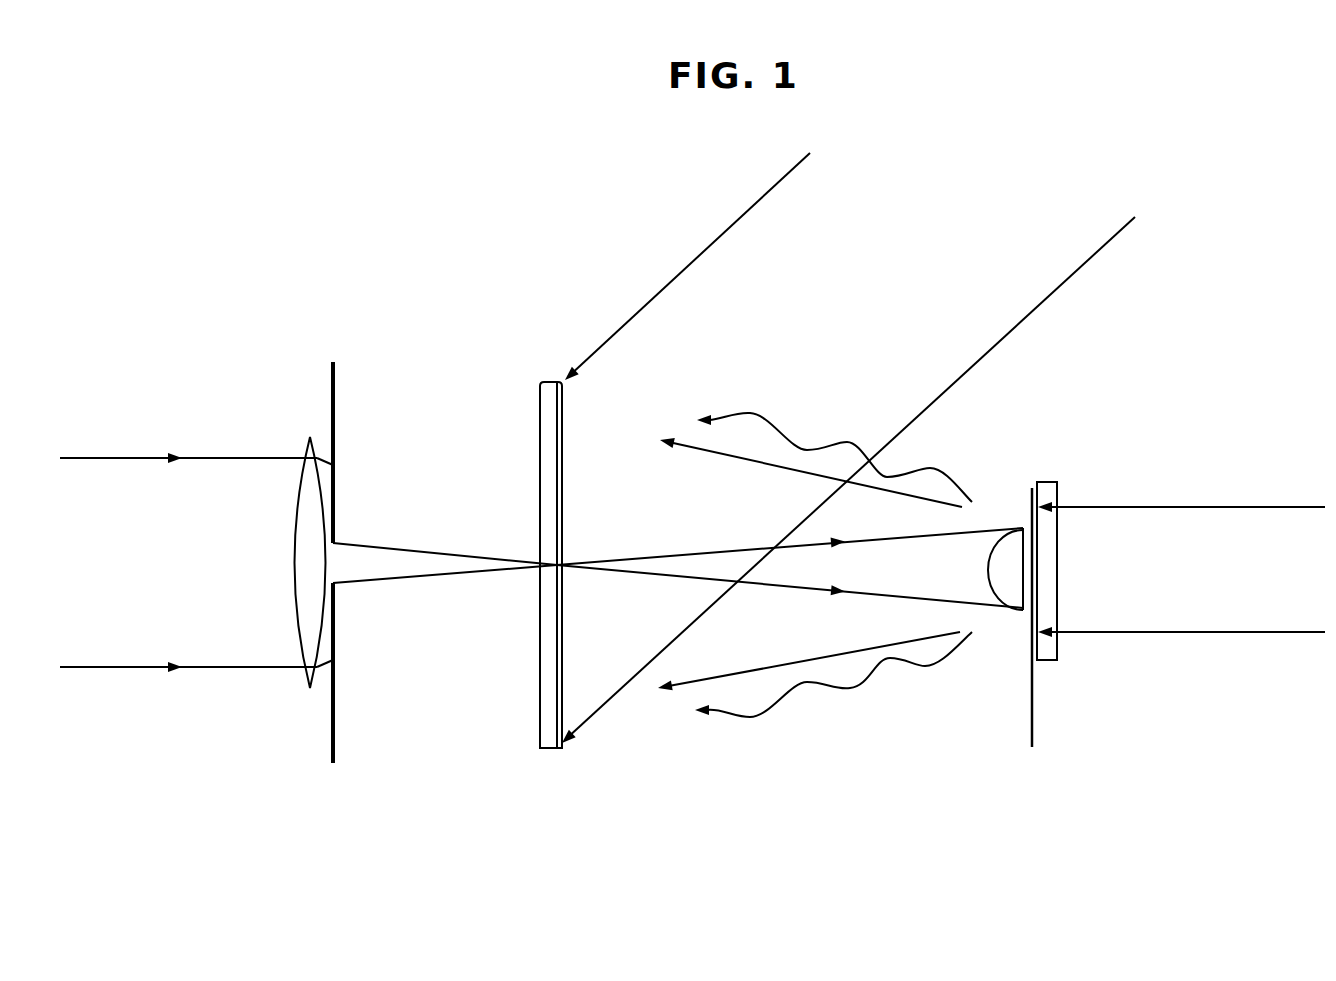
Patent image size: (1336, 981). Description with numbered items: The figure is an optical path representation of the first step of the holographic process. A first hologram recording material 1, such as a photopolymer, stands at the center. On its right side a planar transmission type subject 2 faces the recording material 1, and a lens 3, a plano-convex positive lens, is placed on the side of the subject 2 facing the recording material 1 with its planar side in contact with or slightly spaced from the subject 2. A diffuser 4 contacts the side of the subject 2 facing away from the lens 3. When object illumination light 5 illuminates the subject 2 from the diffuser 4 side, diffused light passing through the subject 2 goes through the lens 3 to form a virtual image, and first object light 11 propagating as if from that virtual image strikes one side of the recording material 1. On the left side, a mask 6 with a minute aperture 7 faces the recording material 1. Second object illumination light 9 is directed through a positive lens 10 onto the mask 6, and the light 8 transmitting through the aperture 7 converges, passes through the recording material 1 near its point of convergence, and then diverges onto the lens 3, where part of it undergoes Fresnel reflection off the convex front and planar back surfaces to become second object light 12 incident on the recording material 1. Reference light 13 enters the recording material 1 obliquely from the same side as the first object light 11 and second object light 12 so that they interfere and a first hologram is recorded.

The first hologram recording material 1 is at (557, 748).
The planar transmission type subject 2 is at (1033, 635).
The lens 3 is at (1015, 607).
The diffuser 4 is at (1055, 643).
The object illumination light 5 is at (1260, 507).
The mask 6 is at (334, 762).
The minute aperture 7 is at (328, 567).
The light transmitting through the aperture 8 is at (418, 585).
The second object illumination light 9 is at (119, 667).
The positive lens 10 is at (309, 688).
The first object light 11 is at (810, 690).
The second object light 12 is at (683, 440).
The reference light 13 is at (1103, 247).